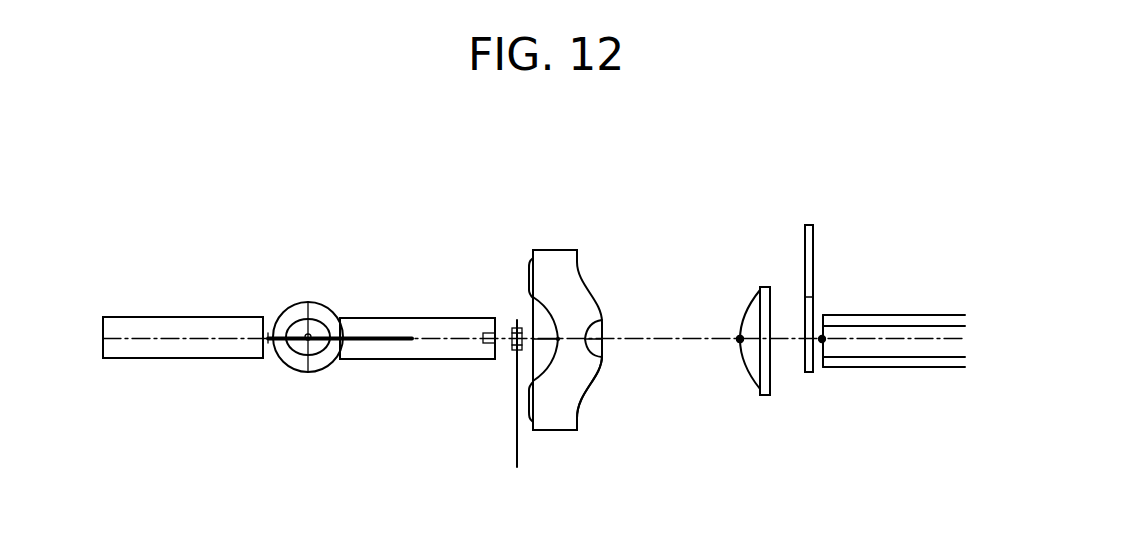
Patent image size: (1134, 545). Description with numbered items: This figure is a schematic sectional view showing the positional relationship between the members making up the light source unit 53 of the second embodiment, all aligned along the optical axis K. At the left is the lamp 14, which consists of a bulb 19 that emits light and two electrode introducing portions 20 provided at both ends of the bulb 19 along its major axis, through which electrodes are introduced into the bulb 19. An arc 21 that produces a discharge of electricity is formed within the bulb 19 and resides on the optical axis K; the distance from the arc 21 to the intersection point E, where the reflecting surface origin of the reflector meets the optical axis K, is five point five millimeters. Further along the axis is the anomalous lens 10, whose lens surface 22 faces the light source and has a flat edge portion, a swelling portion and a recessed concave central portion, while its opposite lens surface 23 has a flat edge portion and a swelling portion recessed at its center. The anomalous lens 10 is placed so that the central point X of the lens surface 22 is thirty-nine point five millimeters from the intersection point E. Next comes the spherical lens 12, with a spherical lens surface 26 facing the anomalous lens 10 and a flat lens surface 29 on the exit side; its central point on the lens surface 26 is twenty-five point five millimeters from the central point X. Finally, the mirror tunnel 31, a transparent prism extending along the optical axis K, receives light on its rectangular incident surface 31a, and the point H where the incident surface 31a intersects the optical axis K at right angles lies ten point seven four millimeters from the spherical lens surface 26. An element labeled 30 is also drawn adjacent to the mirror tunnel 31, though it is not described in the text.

The light source unit 53 is at (458, 153).
The lamp 14 is at (292, 221).
The electrode introducing portion 20 is at (143, 325).
The bulb 19 is at (297, 303).
The arc 21 is at (311, 336).
The intersection point E is at (275, 332).
The central point of lens surface X is at (548, 337).
The lens surface 22 is at (527, 430).
The anomalous lens 10 is at (551, 253).
The lens surface 23 is at (590, 397).
The optical axis K is at (622, 338).
The spherical lens 12 is at (762, 290).
The lens surface 29 is at (770, 290).
The lens surface 26 is at (745, 385).
The aperture plate 30 is at (815, 240).
The mirror tunnel 31 is at (913, 318).
The incident surface 31a is at (817, 372).
The point H is at (825, 338).